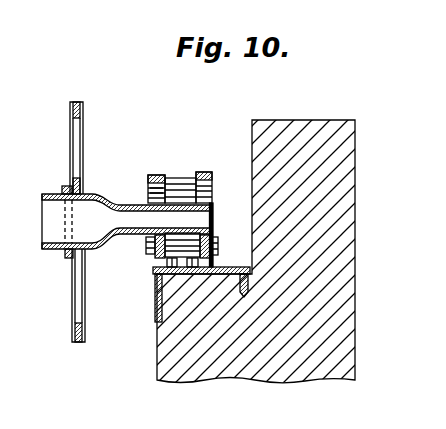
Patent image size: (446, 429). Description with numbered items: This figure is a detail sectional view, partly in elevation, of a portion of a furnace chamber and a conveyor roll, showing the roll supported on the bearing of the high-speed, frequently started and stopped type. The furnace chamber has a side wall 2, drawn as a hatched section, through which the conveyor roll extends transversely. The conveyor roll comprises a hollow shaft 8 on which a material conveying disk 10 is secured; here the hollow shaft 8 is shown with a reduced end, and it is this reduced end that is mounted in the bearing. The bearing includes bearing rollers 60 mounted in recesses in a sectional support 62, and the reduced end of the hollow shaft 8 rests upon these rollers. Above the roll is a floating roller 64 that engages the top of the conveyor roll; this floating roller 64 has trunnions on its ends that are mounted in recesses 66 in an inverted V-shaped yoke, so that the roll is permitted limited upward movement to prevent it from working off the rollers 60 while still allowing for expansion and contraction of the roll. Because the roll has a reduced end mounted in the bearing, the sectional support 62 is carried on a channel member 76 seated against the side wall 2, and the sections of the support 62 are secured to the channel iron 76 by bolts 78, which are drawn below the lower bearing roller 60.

The side wall 2 is at (303, 120).
The hollow shaft 8 is at (42, 203).
The material conveying disk 10 is at (78, 101).
The bearing roller 60 is at (156, 259).
The sectional support 62 is at (148, 252).
The floating roller 64 is at (177, 175).
The recess 66 is at (148, 192).
The channel member 76 is at (246, 267).
The bolt 78 is at (189, 272).